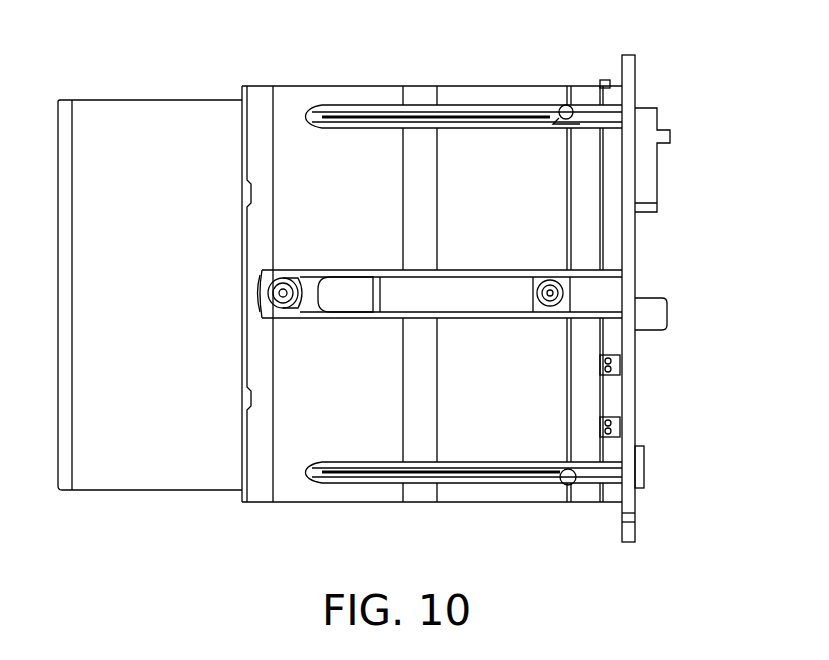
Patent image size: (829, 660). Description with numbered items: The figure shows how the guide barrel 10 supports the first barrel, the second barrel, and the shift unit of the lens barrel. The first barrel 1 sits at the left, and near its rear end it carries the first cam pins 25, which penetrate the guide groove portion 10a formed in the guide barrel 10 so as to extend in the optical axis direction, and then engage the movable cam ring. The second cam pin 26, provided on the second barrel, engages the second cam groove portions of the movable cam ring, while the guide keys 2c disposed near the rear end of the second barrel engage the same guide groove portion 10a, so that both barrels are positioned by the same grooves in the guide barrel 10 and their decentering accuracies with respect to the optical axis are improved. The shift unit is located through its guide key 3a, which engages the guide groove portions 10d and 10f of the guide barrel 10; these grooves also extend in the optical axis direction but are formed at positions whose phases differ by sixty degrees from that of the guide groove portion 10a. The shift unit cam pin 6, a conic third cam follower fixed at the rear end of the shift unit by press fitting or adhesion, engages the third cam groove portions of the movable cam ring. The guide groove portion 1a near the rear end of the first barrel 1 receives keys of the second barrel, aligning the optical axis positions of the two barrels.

The first barrel 1 is at (129, 100).
The guide groove portion 1a is at (285, 270).
The guide barrel 10 is at (262, 86).
The guide groove portion 10a is at (452, 262).
The guide groove portion 10d is at (511, 480).
The guide groove portion 10f is at (530, 110).
The guide key 3a is at (555, 125).
The first cam pin 25 is at (273, 313).
The second cam pin 26 is at (554, 292).
The guide key 2c is at (546, 318).
The shift unit cam pin 6 is at (578, 486).